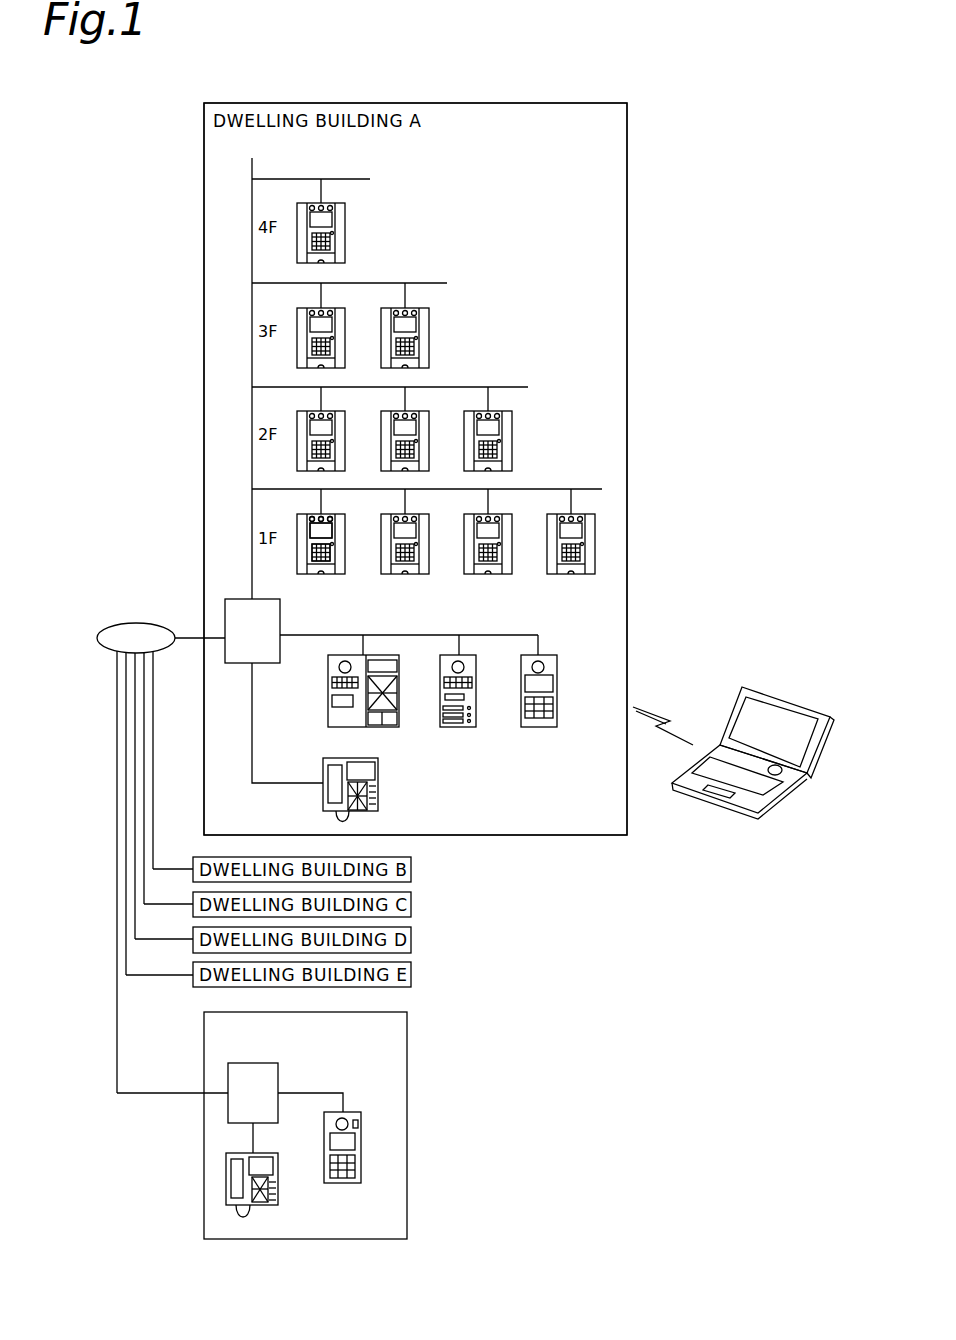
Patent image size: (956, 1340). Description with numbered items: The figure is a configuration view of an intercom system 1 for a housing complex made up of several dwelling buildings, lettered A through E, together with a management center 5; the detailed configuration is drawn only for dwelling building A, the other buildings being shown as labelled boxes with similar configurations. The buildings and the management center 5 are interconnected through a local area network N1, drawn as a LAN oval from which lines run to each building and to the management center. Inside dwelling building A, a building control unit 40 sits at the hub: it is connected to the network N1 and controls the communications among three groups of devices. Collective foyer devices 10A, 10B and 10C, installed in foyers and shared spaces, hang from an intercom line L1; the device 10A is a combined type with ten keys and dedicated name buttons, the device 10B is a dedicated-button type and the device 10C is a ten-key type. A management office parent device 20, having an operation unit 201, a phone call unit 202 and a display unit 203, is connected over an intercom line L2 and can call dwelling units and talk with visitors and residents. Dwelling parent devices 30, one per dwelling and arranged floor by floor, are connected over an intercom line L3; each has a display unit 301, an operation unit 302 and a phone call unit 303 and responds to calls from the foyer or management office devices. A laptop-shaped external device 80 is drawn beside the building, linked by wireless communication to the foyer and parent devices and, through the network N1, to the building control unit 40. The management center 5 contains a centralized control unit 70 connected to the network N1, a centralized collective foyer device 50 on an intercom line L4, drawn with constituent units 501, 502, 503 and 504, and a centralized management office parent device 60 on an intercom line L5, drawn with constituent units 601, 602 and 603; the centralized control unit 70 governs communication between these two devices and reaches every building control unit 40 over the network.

The intercom system 1 is at (683, 138).
The management center 5 is at (407, 1020).
The collective foyer device 10A is at (401, 690).
The collective foyer device 10B is at (480, 680).
The collective foyer device 10C is at (558, 658).
The management office parent device 20 is at (343, 754).
The dwelling parent device 30 is at (434, 408).
The building control unit 40 is at (223, 615).
The centralized collective foyer device 50 is at (350, 1112).
The centralized management office parent device 60 is at (278, 1204).
The centralized control unit 70 is at (228, 1078).
The external device 80 is at (755, 686).
The operation unit 201 is at (378, 786).
The phone call unit 202 is at (332, 794).
The display unit 203 is at (363, 770).
The display unit 301 is at (310, 527).
The operation unit 302 is at (340, 530).
The phone call unit 303 is at (333, 552).
The operation unit 501 is at (362, 1165).
The display unit 502 is at (362, 1142).
The camera 503 is at (336, 1124).
The sensor unit 504 is at (362, 1124).
The operation unit 601 is at (277, 1187).
The handset 602 is at (238, 1170).
The display unit 603 is at (265, 1167).
The network N1 is at (128, 623).
The intercom line L1 is at (315, 636).
The intercom line L2 is at (253, 702).
The intercom line L3 is at (252, 552).
The intercom line L4 is at (315, 1091).
The intercom line L5 is at (250, 1137).